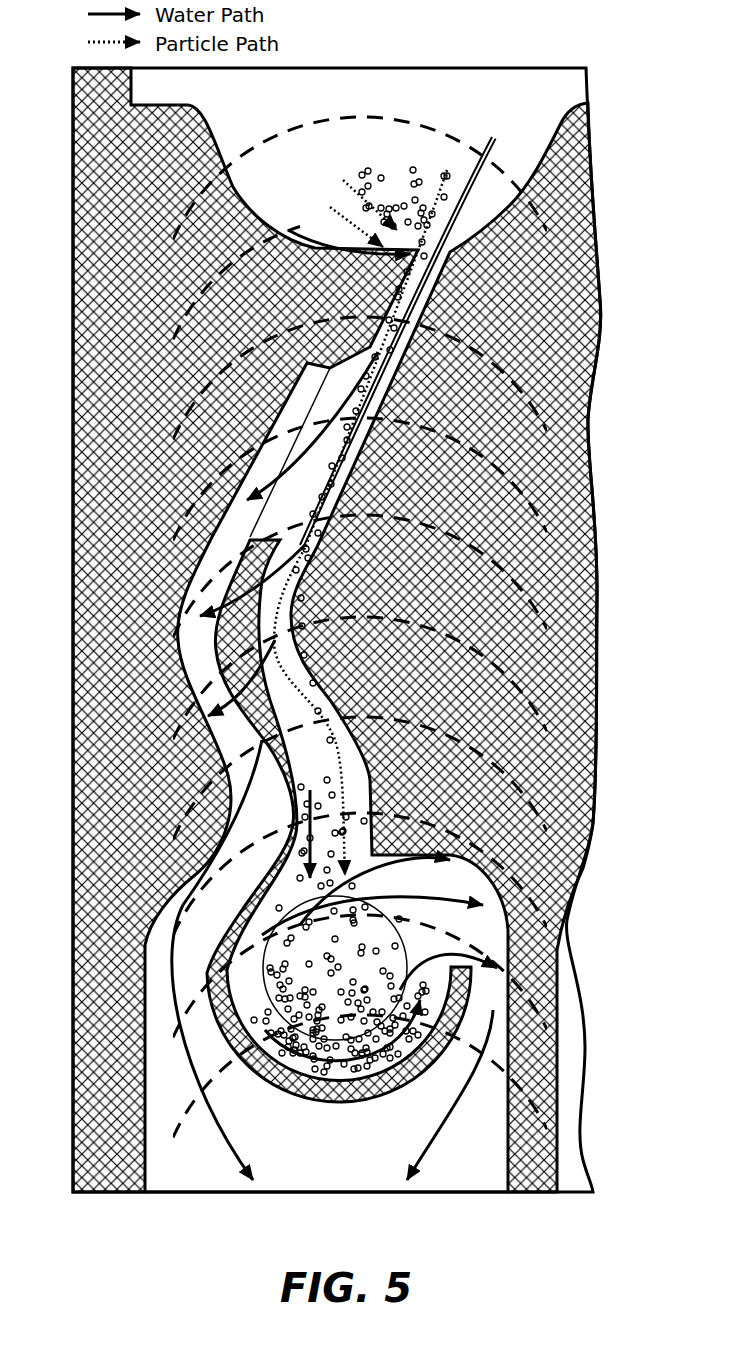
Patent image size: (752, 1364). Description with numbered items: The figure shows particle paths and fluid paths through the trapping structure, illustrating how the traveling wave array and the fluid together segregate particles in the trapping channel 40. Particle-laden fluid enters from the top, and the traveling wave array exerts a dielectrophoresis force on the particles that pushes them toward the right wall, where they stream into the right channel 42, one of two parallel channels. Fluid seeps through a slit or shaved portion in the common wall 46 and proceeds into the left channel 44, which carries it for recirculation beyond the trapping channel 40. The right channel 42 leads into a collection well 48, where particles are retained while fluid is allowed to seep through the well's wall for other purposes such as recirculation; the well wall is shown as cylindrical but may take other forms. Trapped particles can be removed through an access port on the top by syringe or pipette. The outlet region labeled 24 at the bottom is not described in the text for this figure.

The trapping channel 40 is at (347, 88).
The right channel 42 is at (410, 360).
The left channel 44 is at (303, 400).
The common wall 46 is at (257, 538).
The collection well 48 is at (263, 923).
The outlet 24 is at (331, 1168).